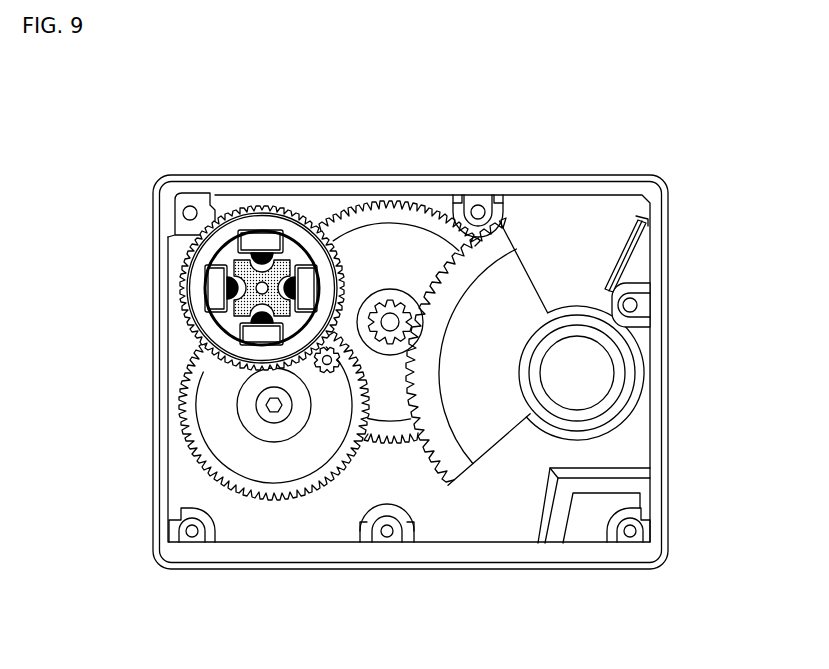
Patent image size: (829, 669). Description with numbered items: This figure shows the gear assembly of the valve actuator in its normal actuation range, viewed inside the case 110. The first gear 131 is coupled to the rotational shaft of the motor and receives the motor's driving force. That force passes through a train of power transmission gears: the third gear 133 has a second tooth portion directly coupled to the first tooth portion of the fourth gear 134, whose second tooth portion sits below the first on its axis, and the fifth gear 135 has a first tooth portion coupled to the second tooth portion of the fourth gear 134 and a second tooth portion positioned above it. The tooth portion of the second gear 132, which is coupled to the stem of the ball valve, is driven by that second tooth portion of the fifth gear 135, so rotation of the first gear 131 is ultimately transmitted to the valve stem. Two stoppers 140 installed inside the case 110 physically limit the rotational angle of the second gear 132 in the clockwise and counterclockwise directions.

The case 110 is at (398, 181).
The first gear 131 is at (342, 362).
The second gear 132 is at (523, 295).
The third gear 133 is at (203, 267).
The fourth gear 134 is at (185, 405).
The fifth gear 135 is at (389, 403).
The stopper 140 is at (613, 487).